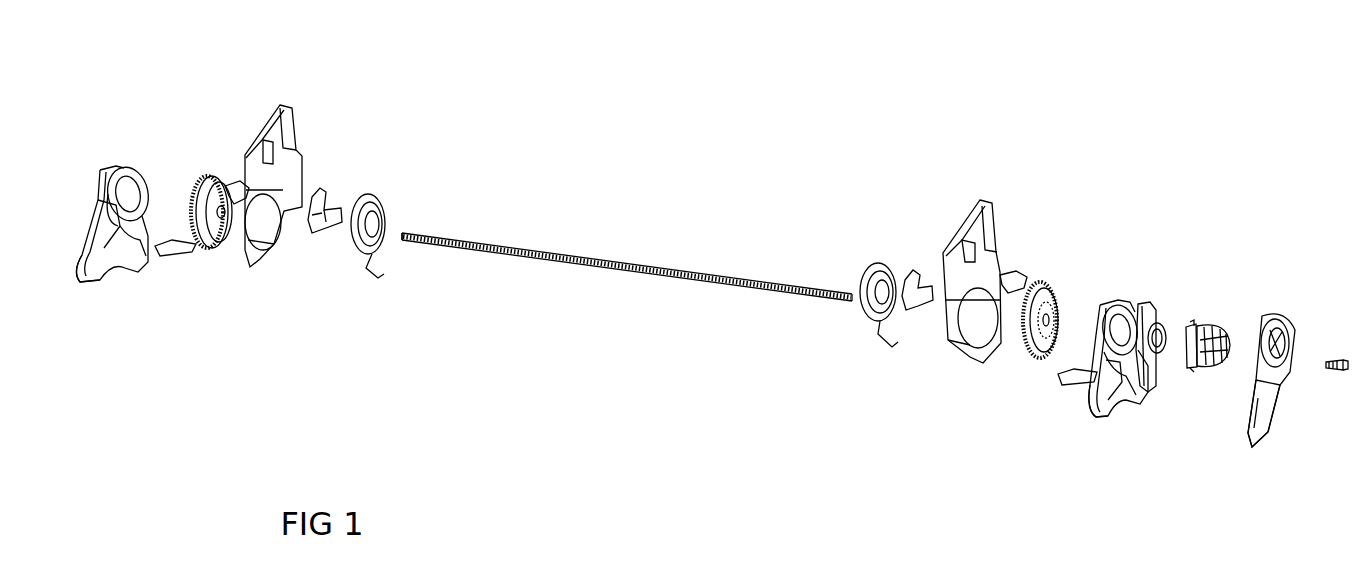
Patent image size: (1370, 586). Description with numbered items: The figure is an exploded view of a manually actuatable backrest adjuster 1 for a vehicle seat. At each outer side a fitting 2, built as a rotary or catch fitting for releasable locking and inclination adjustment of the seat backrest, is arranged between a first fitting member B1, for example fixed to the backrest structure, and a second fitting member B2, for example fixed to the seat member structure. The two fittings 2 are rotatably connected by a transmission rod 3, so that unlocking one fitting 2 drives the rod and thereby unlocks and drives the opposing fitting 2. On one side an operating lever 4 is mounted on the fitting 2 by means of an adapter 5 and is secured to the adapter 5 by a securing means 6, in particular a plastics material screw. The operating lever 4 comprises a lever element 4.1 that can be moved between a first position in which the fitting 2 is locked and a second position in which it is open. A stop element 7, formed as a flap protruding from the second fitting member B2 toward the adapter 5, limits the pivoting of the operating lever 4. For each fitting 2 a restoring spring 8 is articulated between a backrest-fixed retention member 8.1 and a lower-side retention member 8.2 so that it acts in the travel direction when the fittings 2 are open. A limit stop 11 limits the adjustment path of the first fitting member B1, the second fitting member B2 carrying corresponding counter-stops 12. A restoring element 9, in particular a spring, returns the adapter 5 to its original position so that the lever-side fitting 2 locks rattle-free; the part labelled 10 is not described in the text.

The backrest adjuster 1 is at (790, 112).
The fitting 2 is at (196, 178).
The transmission rod 3 is at (598, 255).
The operating lever 4 is at (1265, 323).
The lever element 4.1 is at (1265, 408).
The adapter 5 is at (1192, 330).
The securing means 6 is at (1332, 372).
The stop element 7 is at (1130, 312).
The restoring spring 8 is at (353, 205).
The retention member 8.1 is at (322, 240).
The retention member 8.2 is at (170, 254).
The restoring element 9 is at (1156, 352).
The motor 10 is at (1200, 325).
The limit stop 11 is at (232, 172).
The counter-stop 12 is at (100, 175).
The first fitting member B1 is at (268, 117).
The second fitting member B2 is at (92, 252).